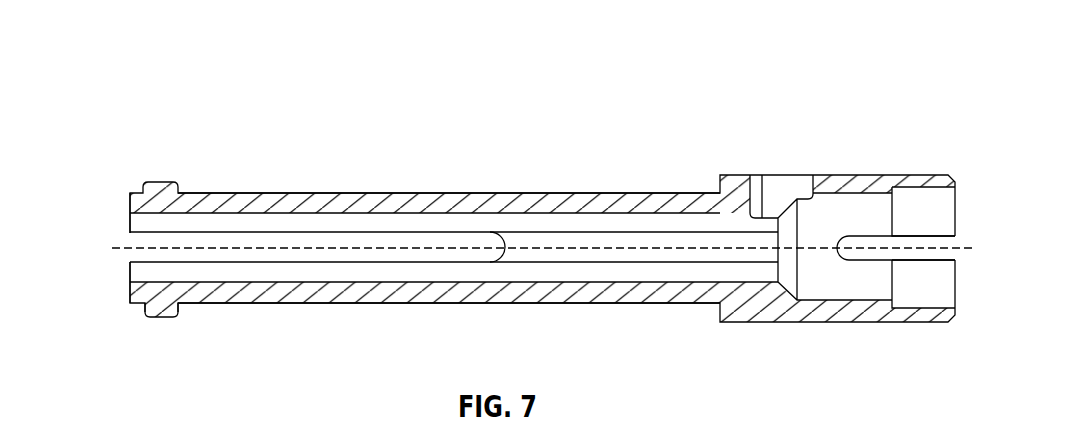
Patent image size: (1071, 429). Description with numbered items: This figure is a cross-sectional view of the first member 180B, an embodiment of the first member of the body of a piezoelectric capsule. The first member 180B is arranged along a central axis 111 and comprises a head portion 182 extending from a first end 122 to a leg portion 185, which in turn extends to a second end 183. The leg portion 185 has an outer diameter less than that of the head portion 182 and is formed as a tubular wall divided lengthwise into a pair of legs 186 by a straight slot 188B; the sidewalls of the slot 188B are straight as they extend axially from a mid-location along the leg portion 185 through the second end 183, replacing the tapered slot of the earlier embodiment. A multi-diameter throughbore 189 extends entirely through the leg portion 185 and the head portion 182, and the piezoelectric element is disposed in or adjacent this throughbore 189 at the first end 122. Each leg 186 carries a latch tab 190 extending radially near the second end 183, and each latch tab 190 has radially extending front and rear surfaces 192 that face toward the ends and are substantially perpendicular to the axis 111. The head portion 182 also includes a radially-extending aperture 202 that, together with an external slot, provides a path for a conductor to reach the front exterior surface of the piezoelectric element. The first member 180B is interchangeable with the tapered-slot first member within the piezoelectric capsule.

The first member 180B is at (160, 102).
The latch tab 190 is at (163, 182).
The leg 186 is at (270, 210).
The straight slot 188B is at (376, 238).
The leg portion 185 is at (540, 192).
The radially-extending aperture 202 is at (770, 177).
The head portion 182 is at (830, 175).
The central axis 111 is at (663, 247).
The multi-diameter throughbore 189 is at (128, 228).
The second end 183 is at (130, 297).
The front and rear surfaces 192 is at (137, 305).
The first end 122 is at (912, 322).